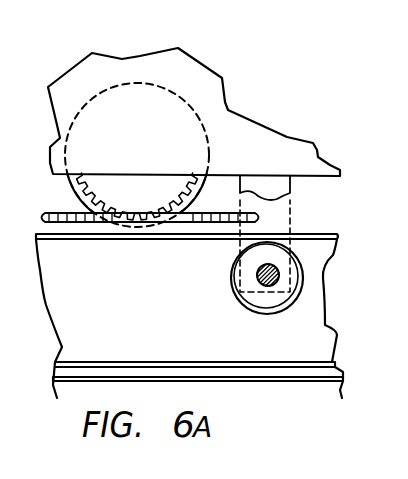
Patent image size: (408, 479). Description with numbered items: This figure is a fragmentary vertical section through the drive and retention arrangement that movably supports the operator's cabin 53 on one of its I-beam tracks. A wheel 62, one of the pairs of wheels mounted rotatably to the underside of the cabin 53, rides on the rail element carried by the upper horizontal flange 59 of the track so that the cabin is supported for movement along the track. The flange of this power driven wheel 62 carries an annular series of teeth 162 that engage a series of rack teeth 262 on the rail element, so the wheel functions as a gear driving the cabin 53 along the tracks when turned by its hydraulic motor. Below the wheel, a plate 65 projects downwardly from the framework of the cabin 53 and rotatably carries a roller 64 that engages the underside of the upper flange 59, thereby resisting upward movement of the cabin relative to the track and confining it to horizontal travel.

The operator's cabin 53 is at (280, 146).
The wheels 62 is at (193, 110).
The teeth 162 is at (193, 222).
The rack teeth 262 is at (80, 222).
The plates 65 is at (290, 190).
The upper horizontal flanges 59 is at (310, 232).
The rollers 64 is at (301, 272).